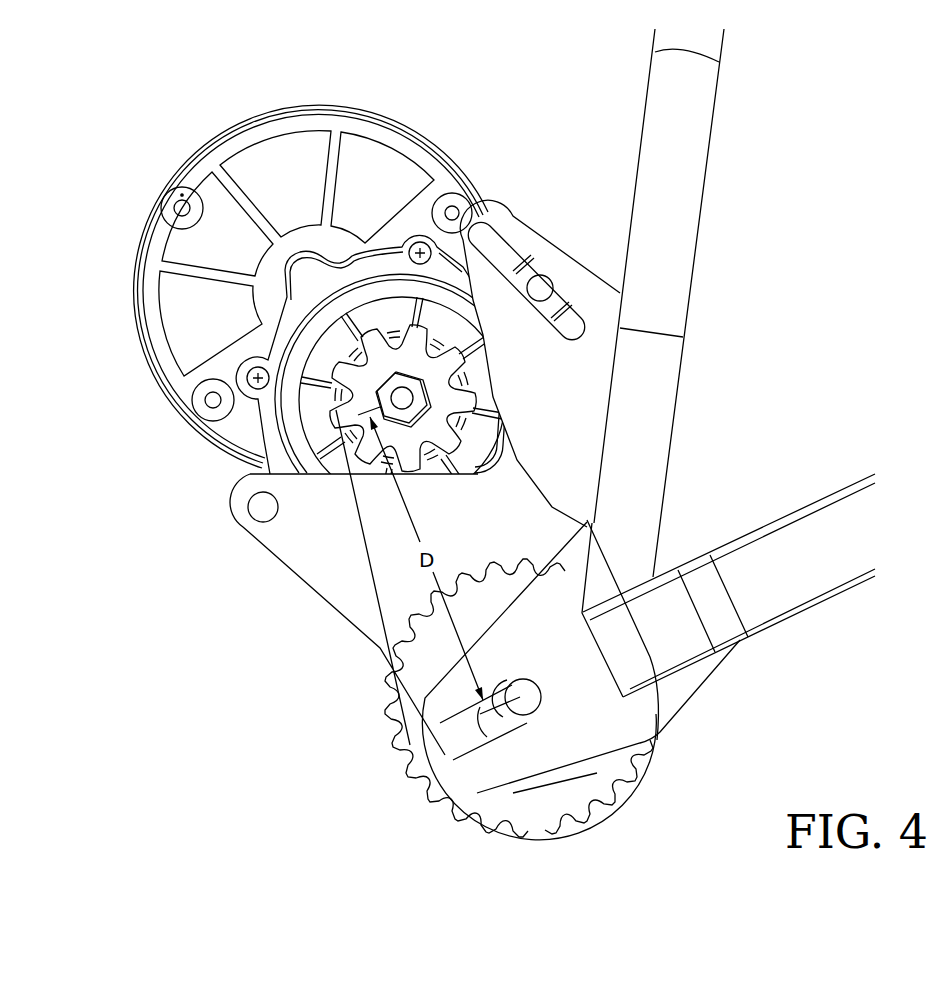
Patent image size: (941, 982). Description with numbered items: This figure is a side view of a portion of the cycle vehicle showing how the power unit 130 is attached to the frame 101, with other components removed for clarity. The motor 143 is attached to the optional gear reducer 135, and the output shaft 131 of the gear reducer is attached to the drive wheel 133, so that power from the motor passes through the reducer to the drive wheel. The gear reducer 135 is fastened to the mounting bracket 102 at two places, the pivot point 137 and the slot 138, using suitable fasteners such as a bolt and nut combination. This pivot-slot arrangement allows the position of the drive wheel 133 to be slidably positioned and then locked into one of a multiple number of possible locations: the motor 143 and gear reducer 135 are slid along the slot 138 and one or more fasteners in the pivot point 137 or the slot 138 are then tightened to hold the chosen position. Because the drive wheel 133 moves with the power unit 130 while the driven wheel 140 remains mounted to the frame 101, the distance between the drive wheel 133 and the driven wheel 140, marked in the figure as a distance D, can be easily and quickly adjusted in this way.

The frame 101 is at (652, 472).
The mounting bracket 102 is at (313, 582).
The power unit 130 is at (182, 453).
The output shaft 131 is at (408, 405).
The drive wheel 133 is at (440, 399).
The gear reducer 135 is at (383, 300).
The pivot point 137 is at (263, 507).
The slot 138 is at (570, 343).
The driven wheel 140 is at (510, 838).
The motor 143 is at (190, 347).